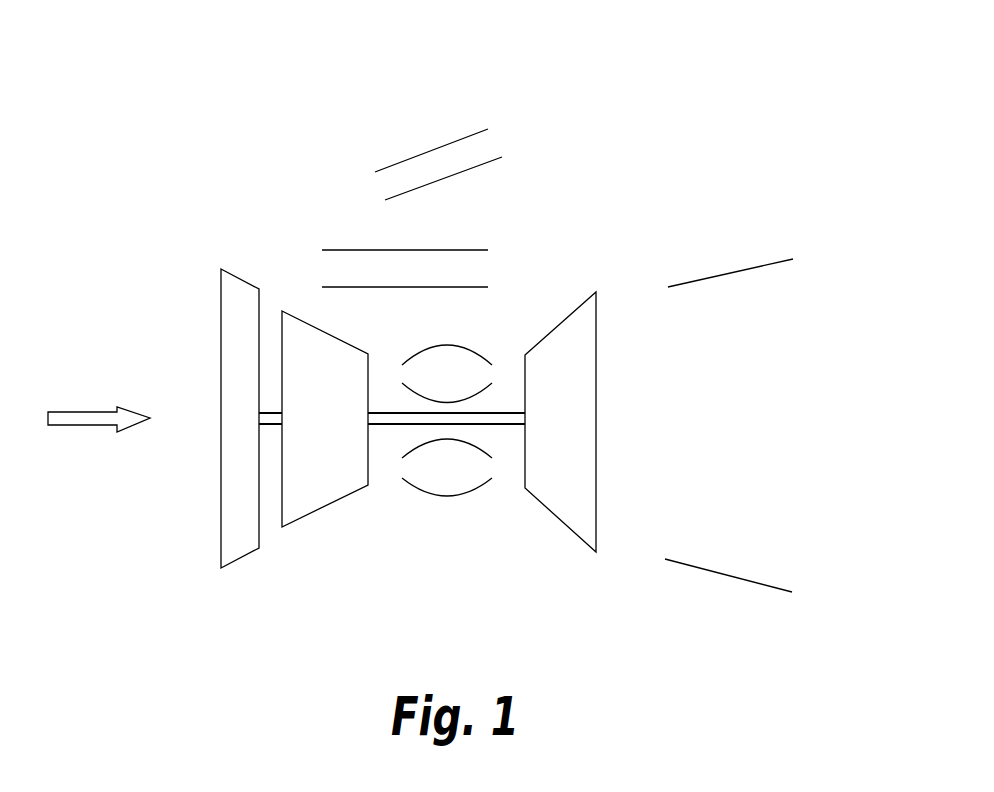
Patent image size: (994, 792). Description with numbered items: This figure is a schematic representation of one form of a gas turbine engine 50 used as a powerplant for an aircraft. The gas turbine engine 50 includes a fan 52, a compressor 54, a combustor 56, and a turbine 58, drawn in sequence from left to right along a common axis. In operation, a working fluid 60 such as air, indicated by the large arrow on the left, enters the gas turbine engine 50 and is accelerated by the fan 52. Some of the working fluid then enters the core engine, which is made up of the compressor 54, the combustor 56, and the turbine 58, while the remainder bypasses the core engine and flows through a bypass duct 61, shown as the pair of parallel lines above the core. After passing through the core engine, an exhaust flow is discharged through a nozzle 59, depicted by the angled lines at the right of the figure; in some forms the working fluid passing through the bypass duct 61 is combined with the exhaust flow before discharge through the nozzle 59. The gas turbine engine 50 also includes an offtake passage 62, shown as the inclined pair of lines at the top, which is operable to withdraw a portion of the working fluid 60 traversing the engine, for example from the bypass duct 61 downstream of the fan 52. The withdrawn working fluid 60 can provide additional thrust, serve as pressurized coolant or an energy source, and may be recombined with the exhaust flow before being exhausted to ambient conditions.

The gas turbine engine 50 is at (647, 140).
The fan 52 is at (240, 558).
The compressor 54 is at (330, 508).
The combustor 56 is at (442, 498).
The turbine 58 is at (565, 525).
The nozzle 59 is at (727, 270).
The working fluid 60 is at (77, 425).
The bypass duct 61 is at (445, 248).
The offtake passage 62 is at (428, 150).